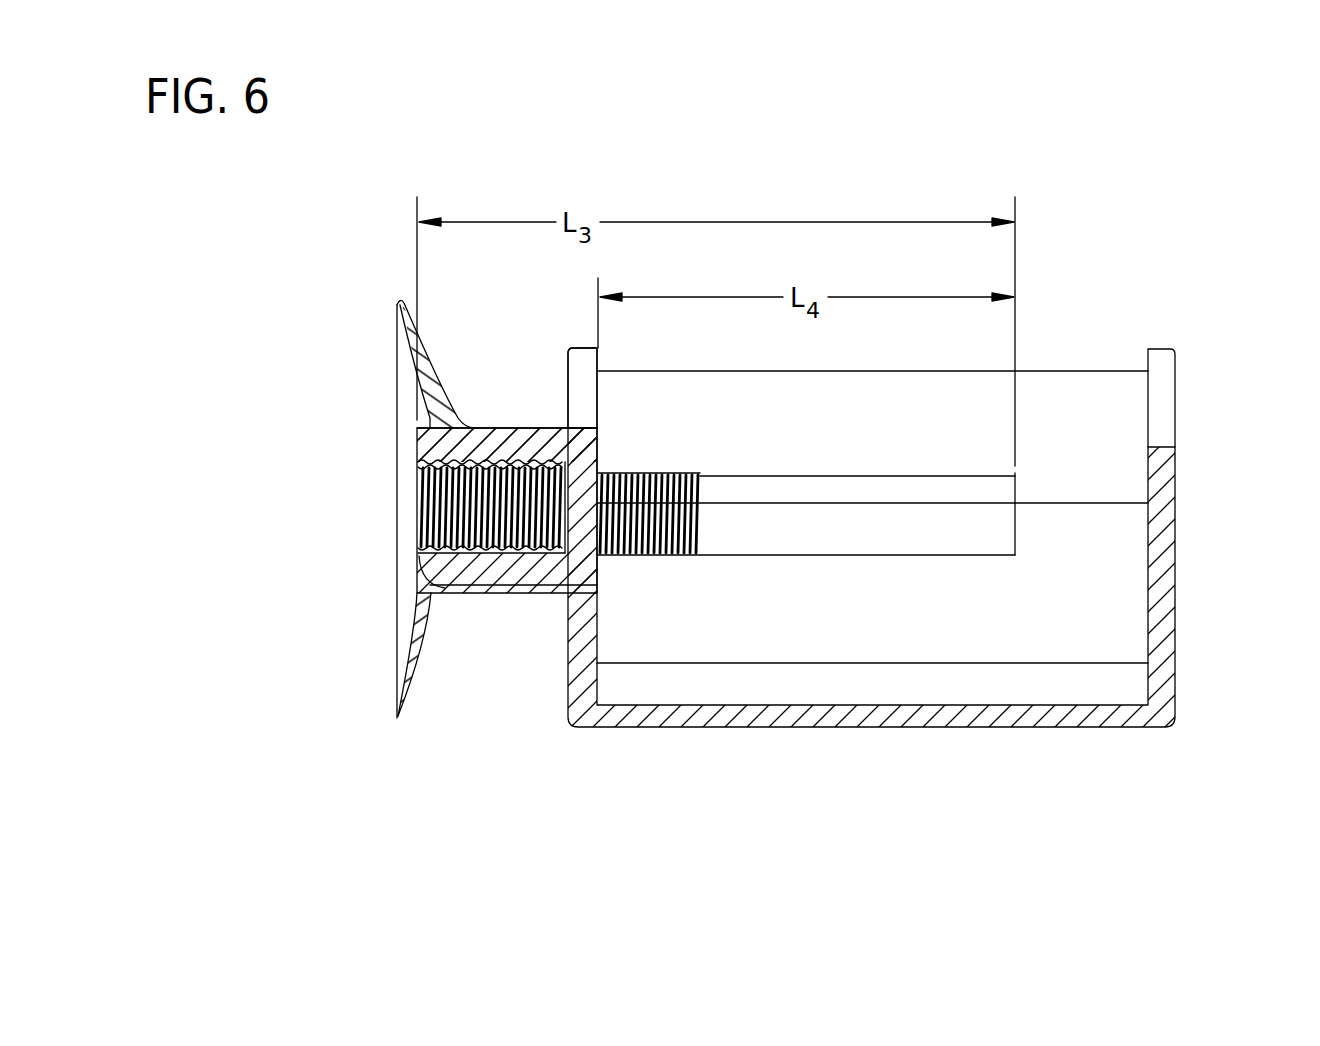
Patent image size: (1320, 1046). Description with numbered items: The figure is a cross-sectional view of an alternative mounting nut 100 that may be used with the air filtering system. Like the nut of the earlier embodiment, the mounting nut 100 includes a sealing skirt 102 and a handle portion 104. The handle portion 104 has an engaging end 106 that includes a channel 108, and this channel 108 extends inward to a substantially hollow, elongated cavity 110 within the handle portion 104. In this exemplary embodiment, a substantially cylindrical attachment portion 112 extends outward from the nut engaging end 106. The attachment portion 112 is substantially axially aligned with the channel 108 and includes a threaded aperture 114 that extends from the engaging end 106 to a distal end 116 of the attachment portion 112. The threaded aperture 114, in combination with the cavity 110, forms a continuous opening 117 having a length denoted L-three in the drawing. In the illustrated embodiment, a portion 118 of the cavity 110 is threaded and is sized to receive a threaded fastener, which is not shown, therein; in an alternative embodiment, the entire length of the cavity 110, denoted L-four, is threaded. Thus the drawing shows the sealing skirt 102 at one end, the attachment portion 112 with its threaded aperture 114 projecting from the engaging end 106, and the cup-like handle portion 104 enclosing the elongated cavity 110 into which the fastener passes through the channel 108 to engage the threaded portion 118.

The mounting nut 100 is at (640, 806).
The sealing skirt 102 is at (398, 331).
The handle portion 104 is at (570, 737).
The engaging end 106 is at (568, 388).
The channel 108 is at (576, 540).
The elongated cavity 110 is at (1015, 489).
The attachment portion 112 is at (470, 593).
The threaded aperture 114 is at (418, 512).
The distal end 116 is at (418, 441).
The continuous opening 117 is at (1018, 568).
The threaded portion of cavity 118 is at (665, 482).